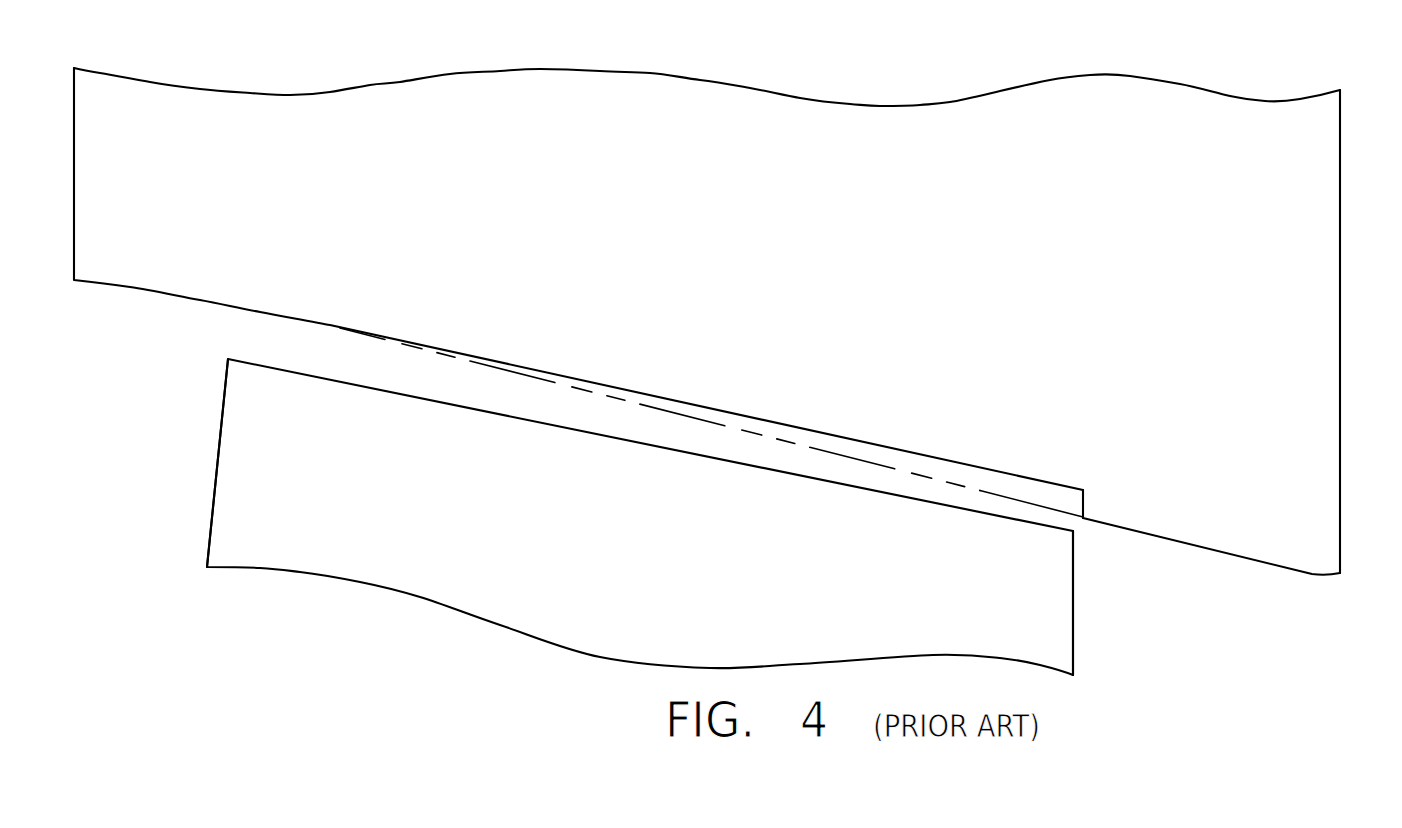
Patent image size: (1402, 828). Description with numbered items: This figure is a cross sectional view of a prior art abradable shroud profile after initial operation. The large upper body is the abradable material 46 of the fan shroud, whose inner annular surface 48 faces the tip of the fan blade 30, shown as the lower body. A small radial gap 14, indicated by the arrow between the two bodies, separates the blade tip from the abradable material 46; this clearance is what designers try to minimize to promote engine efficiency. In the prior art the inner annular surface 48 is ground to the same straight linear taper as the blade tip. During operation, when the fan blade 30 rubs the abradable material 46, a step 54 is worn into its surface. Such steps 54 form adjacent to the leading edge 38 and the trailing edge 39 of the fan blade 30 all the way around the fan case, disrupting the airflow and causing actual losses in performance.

The radial gap 14 is at (270, 333).
The fan blade 30 is at (358, 581).
The leading edge 38 is at (214, 491).
The trailing edge 39 is at (1073, 631).
The abradable material 46 is at (1297, 573).
The inner annular surface 48 is at (1326, 578).
The step 54 is at (1084, 503).